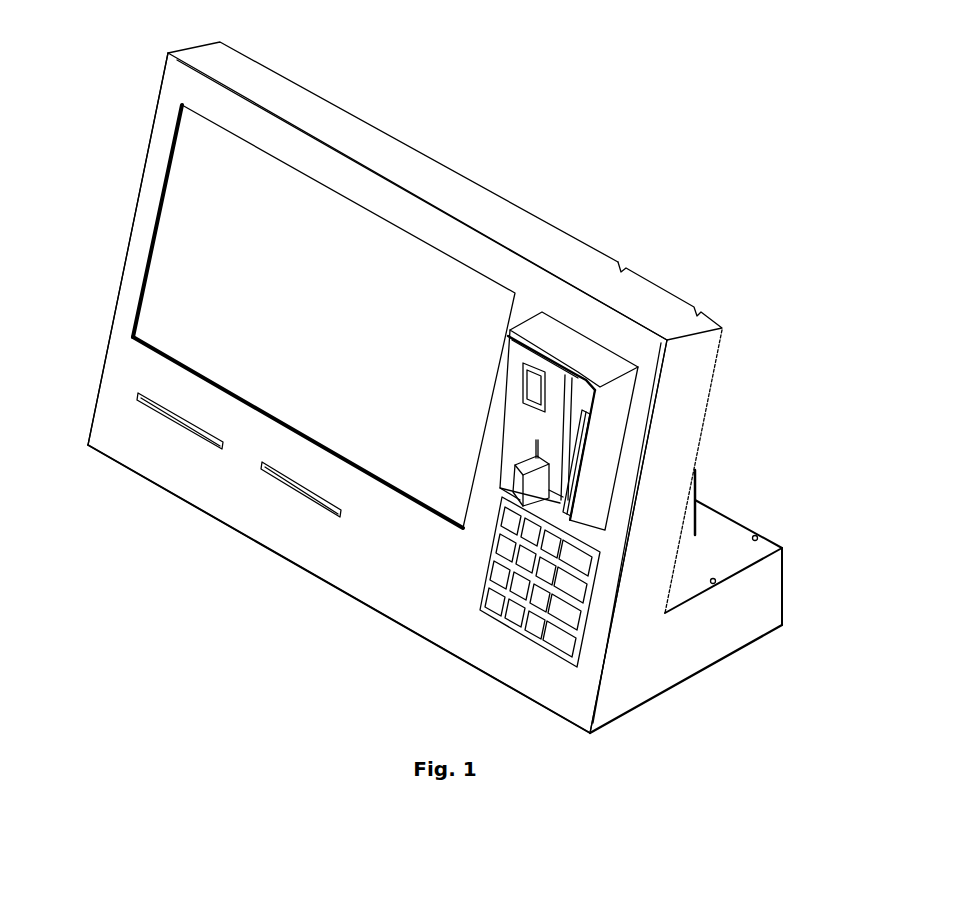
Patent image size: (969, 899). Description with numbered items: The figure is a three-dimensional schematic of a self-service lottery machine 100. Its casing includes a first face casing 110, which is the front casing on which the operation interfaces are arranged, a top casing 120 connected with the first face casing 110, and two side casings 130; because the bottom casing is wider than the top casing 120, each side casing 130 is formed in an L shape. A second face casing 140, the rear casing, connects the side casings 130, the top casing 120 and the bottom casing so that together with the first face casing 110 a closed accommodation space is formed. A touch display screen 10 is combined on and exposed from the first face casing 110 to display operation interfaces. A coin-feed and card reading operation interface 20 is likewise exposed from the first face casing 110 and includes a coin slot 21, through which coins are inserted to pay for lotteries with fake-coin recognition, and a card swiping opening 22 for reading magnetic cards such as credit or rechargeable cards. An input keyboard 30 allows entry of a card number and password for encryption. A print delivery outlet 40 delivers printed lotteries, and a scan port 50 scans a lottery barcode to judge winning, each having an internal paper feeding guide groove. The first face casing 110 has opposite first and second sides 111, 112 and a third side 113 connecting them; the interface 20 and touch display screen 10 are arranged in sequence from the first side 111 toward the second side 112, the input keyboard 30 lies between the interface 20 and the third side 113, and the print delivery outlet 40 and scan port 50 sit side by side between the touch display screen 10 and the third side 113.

The self-service lottery machine 100 is at (506, 142).
The touch display screen 10 is at (190, 223).
The coin-feed and card reading operation interface 20 is at (617, 403).
The coin slot 21 is at (552, 353).
The card swiping opening 22 is at (580, 483).
The input keyboard 30 is at (567, 607).
The print delivery outlet 40 is at (177, 423).
The scan port 50 is at (290, 487).
The first face casing 110 is at (117, 362).
The first side 111 is at (620, 587).
The second side 112 is at (120, 287).
The third side 113 is at (388, 618).
The top casing 120 is at (303, 100).
The side casing 130 is at (660, 470).
The second face casing 140 is at (707, 530).